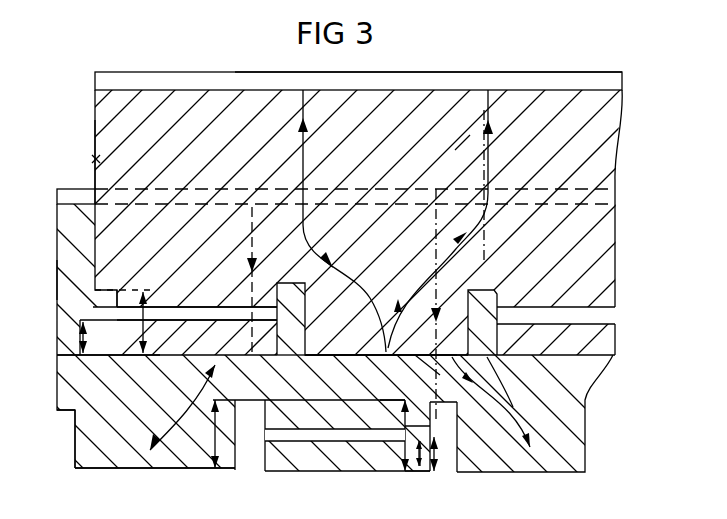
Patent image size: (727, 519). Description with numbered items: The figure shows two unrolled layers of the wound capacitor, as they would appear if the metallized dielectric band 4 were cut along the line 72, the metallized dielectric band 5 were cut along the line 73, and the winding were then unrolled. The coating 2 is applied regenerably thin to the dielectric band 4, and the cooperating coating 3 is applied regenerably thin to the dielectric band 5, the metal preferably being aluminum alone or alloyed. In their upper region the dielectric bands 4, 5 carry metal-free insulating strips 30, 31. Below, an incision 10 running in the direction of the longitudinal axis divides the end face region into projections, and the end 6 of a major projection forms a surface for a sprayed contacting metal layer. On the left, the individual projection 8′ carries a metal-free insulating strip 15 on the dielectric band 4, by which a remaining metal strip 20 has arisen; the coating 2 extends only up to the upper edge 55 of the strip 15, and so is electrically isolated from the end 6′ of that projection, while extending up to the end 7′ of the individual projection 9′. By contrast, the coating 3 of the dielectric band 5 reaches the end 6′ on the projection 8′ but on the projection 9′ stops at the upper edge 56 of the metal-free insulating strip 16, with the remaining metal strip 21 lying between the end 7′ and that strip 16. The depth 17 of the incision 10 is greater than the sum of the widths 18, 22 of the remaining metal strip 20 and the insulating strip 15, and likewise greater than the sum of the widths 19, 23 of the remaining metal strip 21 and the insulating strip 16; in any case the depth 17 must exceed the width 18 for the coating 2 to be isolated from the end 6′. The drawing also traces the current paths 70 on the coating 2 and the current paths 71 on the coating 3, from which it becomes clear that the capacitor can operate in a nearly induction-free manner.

The coating 2 is at (125, 95).
The coating 3 is at (62, 232).
The dielectric band 4 is at (262, 70).
The dielectric band 5 is at (78, 185).
The end of major projection 6 is at (180, 357).
The end of individual projection 6′ is at (178, 470).
The end of individual projection 7′ is at (356, 356).
The individual projection 8′ is at (160, 358).
The individual projection 9′ is at (381, 355).
The incision 10 is at (252, 448).
The metal-free insulating strip 15 is at (190, 305).
The metal-free insulating strip 16 is at (318, 436).
The depth of incision 17 is at (145, 306).
The width of remaining metal strip 18 is at (72, 337).
The width of remaining metal strip 19 is at (434, 464).
The remaining metal strip 20 is at (114, 358).
The remaining metal strip 21 is at (311, 473).
The width of metal-free insulating strip 22 is at (95, 305).
The width of metal-free insulating strip 23 is at (426, 472).
The metal-free insulating strip 30 is at (95, 79).
The metal-free insulating strip 31 is at (57, 192).
The upper edge of metal-free insulating strip 55 is at (270, 305).
The upper edge of metal-free insulating strip 56 is at (302, 357).
The current paths 70 is at (303, 176).
The current paths 71 is at (254, 245).
The cutting line 72 is at (99, 159).
The cutting line 73 is at (57, 277).